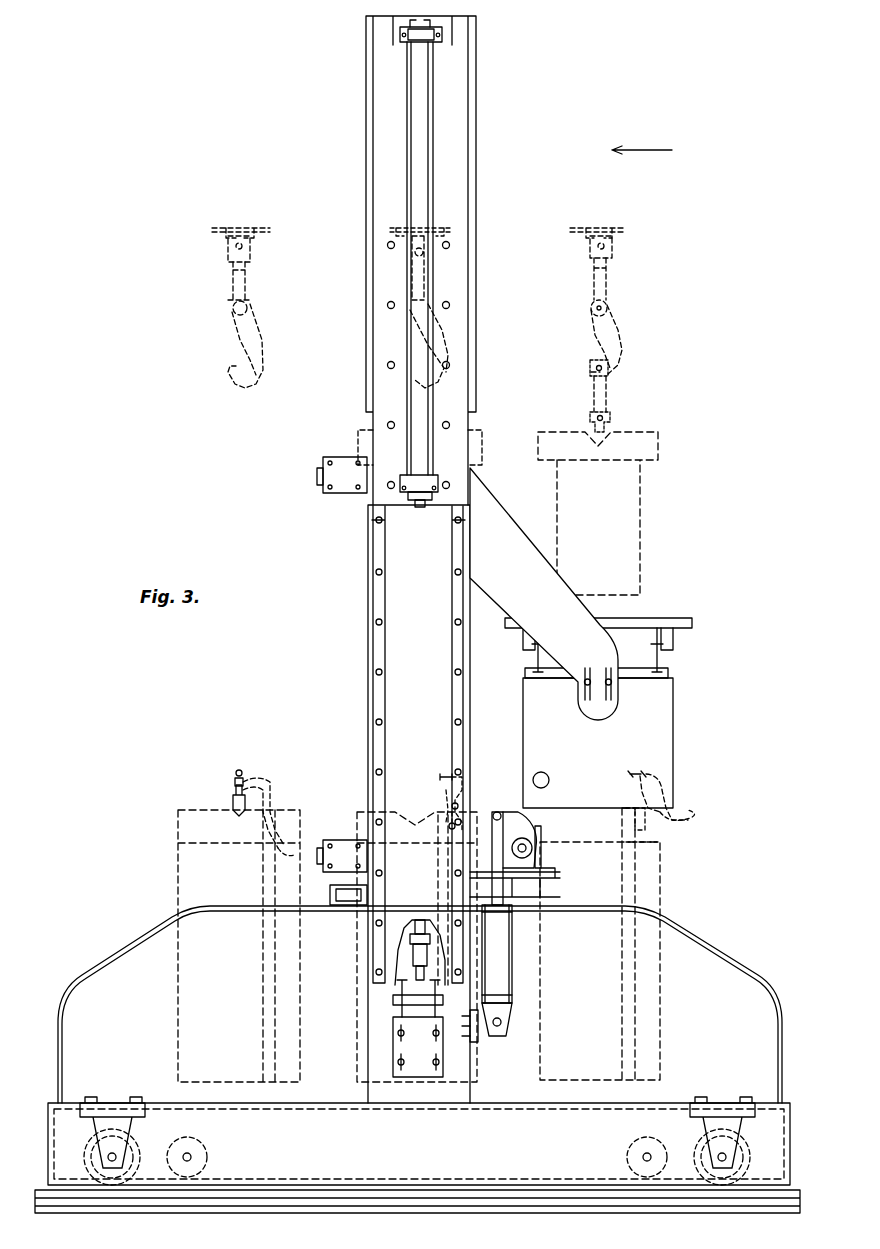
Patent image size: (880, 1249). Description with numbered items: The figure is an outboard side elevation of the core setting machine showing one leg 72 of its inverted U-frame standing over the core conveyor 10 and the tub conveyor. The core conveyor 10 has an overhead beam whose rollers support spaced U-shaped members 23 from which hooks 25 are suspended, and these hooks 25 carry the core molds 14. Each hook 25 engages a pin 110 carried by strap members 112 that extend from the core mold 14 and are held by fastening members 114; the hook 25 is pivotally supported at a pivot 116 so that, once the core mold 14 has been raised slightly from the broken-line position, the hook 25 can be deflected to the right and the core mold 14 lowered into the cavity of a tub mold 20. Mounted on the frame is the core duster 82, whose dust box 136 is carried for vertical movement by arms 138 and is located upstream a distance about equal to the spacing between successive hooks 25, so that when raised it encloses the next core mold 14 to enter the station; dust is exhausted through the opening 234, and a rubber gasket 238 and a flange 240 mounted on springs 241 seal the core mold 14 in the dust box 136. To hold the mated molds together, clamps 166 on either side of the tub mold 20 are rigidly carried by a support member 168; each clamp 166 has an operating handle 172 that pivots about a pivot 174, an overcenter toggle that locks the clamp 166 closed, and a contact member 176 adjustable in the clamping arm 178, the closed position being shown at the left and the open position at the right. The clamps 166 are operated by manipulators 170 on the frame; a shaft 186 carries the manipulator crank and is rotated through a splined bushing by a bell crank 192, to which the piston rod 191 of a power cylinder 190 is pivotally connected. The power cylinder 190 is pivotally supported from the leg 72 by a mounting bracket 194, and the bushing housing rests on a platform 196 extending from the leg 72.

The core conveyor 10 is at (612, 228).
The core mold 14 is at (642, 522).
The tub mold 20 is at (170, 878).
The U-shaped member 23 is at (607, 268).
The hook 25 is at (620, 345).
The leg 72 is at (478, 120).
The core duster 82 is at (698, 712).
The pin 110 is at (592, 360).
The strap member 112 is at (607, 392).
The fastening member 114 is at (610, 416).
The pivot 116 is at (608, 312).
The dust box 136 is at (673, 740).
The arm 138 is at (506, 520).
The clamp 166 is at (662, 778).
The support member 168 is at (640, 888).
The manipulator 170 is at (509, 789).
The operating handle 172 is at (690, 812).
The pivot 174 is at (650, 832).
The contact member 176 is at (232, 795).
The clamping arm 178 is at (243, 772).
The shaft 186 is at (540, 852).
The power cylinder 190 is at (512, 964).
The piston rod 191 is at (512, 910).
The bell crank 192 is at (530, 826).
The mounting bracket 194 is at (486, 1040).
The platform 196 is at (556, 880).
The opening 234 is at (548, 774).
The rubber gasket 238 is at (660, 618).
The flange 240 is at (692, 626).
The spring 241 is at (668, 674).